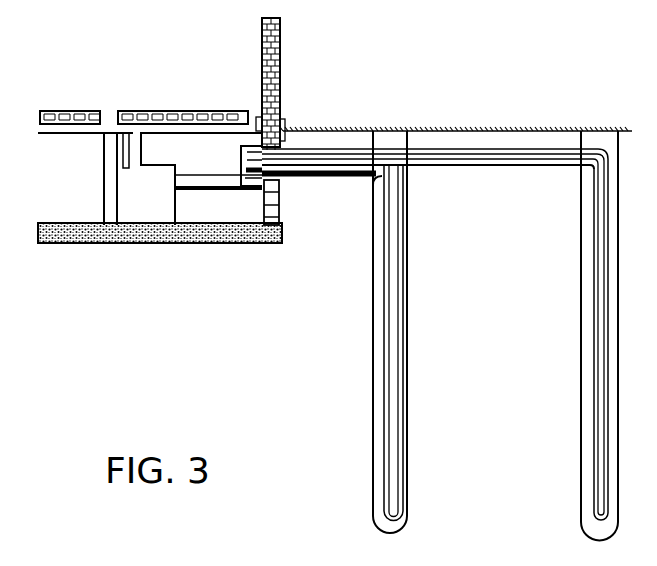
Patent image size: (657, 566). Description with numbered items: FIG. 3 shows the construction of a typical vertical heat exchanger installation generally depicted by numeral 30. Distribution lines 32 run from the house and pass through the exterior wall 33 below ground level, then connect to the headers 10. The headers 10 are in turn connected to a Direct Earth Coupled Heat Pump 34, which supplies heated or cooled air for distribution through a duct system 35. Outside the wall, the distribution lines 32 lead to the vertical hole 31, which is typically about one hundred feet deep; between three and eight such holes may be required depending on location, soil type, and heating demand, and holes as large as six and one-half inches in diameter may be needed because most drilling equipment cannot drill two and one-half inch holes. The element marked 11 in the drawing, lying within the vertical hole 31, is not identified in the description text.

The headers 10 is at (241, 160).
The inner tube 11 is at (400, 458).
The heat exchanger installation 30 is at (290, 328).
The vertical hole 31 is at (410, 398).
The distribution lines 32 is at (360, 162).
The exterior wall 33 is at (280, 214).
The Direct Earth Coupled Heat Pump 34 is at (128, 245).
The duct system 35 is at (105, 153).